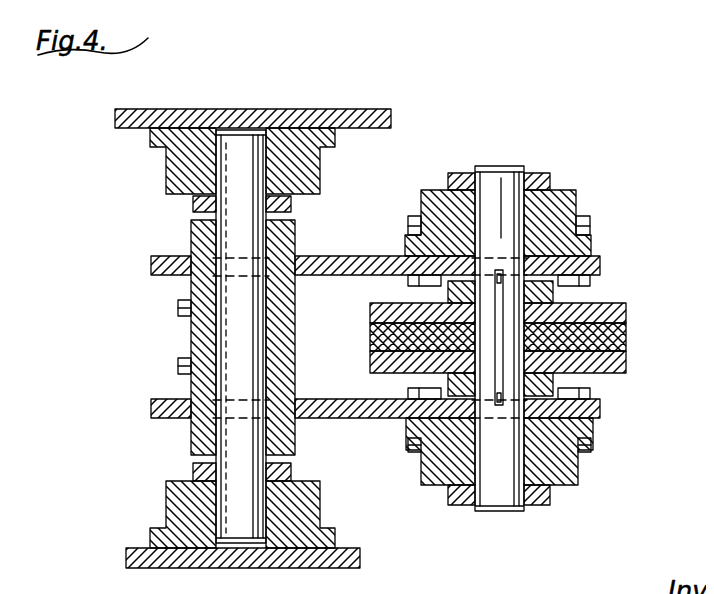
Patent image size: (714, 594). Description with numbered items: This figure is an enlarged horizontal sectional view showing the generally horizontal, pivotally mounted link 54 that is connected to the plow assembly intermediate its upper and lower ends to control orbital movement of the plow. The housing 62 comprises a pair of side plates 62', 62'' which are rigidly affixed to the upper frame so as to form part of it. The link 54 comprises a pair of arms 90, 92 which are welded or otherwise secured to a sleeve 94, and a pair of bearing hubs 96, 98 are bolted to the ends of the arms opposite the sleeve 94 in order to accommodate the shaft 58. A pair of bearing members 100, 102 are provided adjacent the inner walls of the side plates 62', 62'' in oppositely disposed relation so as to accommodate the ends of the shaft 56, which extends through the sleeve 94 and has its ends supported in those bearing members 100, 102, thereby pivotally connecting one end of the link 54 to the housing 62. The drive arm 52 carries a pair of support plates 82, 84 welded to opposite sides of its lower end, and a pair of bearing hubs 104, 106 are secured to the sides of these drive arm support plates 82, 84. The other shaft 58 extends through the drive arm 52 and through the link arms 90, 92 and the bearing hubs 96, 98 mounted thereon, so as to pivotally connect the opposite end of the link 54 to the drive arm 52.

The drive arm 52 is at (634, 329).
The pivotal link 54 is at (327, 240).
The shaft 56 is at (233, 138).
The shaft 58 is at (495, 167).
The housing 62 is at (253, 102).
The side plate 62' is at (243, 571).
The side plate 62'' is at (347, 91).
The support plate 82 is at (620, 351).
The support plate 84 is at (621, 301).
The arm 90 is at (361, 258).
The arm 92 is at (337, 405).
The sleeve 94 is at (183, 328).
The bearing hub 96 is at (557, 198).
The bearing hub 98 is at (556, 462).
The bearing member 100 is at (170, 505).
The bearing member 102 is at (168, 164).
The bearing hub 104 is at (546, 377).
The bearing hub 106 is at (540, 296).